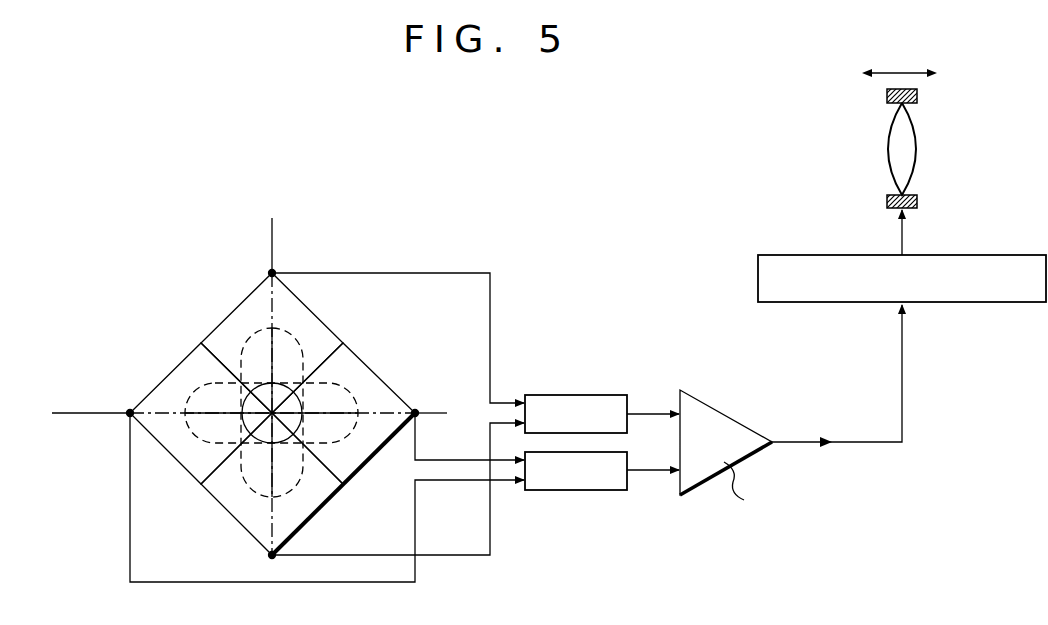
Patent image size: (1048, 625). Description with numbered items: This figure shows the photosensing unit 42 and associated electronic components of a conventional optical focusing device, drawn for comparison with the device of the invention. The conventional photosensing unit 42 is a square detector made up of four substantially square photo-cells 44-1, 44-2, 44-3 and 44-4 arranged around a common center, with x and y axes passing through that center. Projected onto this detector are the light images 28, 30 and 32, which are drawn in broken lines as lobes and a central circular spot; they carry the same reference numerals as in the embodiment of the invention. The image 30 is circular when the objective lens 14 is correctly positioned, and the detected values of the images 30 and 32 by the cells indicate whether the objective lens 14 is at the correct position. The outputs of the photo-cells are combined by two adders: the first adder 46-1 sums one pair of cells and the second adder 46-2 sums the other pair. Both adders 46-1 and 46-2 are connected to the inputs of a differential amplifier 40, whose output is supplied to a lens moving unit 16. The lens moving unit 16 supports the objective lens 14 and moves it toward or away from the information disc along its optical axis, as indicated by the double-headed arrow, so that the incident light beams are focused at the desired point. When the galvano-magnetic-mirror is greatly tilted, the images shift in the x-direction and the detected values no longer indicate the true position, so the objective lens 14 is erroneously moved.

The objective lens 14 is at (908, 146).
The lens moving unit 16 is at (1016, 295).
The image 28 is at (197, 440).
The image 30 is at (255, 497).
The image 32 is at (283, 383).
The differential amplifier 40 is at (733, 436).
The photosensing unit 42 is at (262, 378).
The photo-cell 44-1 is at (325, 336).
The photo-cell 44-2 is at (314, 497).
The photo-cell 44-3 is at (165, 391).
The photo-cell 44-4 is at (389, 394).
The first adder 46-1 is at (606, 400).
The second adder 46-2 is at (596, 486).